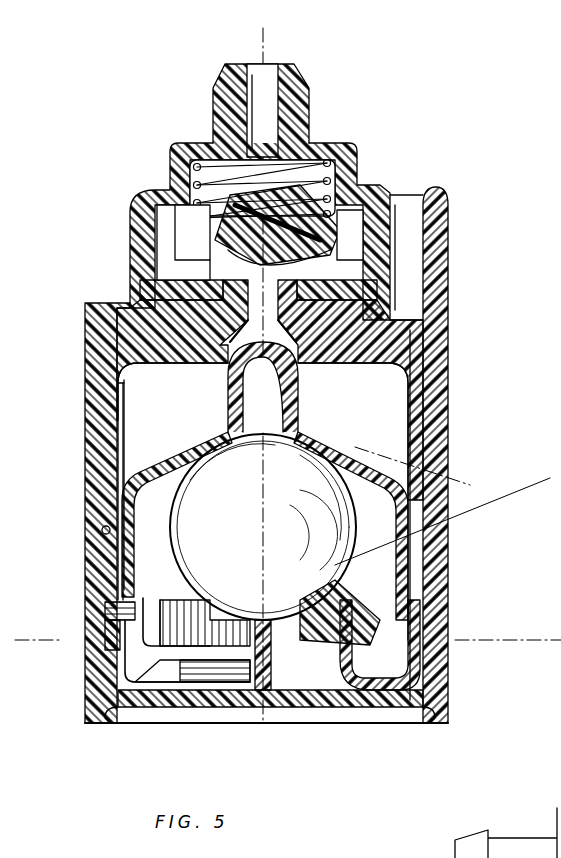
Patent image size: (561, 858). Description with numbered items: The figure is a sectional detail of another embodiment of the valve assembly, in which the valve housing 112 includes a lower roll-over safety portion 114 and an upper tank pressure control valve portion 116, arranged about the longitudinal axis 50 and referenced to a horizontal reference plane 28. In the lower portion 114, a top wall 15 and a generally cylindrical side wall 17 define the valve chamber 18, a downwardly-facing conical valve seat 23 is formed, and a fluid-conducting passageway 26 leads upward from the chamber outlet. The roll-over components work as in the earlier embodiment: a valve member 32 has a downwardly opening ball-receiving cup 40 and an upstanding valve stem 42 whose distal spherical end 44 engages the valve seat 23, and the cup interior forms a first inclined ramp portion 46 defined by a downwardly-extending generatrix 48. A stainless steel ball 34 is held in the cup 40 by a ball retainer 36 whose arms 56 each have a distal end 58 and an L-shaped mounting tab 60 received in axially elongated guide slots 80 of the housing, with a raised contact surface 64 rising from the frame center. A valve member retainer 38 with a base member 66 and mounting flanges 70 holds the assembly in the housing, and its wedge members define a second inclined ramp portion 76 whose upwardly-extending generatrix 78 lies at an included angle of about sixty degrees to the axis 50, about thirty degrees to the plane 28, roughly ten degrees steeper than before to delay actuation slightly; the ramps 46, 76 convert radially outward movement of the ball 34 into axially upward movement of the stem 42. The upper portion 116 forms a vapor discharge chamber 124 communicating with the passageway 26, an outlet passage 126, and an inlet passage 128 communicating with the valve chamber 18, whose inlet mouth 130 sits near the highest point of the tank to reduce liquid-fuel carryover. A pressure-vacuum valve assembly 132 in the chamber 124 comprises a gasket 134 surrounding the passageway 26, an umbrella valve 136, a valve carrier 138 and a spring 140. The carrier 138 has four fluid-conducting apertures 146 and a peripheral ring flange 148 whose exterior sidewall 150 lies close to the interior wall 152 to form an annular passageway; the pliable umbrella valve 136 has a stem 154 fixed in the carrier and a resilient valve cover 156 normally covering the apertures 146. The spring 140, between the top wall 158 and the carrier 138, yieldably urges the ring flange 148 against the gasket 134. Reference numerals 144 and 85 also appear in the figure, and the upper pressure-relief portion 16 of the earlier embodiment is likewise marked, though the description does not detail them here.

The longitudinal axis 50 is at (268, 34).
The outlet passage 126 is at (278, 55).
The upper tank pressure control valve portion 116 is at (357, 159).
The spring 140 is at (330, 143).
The pressure-vacuum valve assembly 132 is at (378, 184).
The lower roll-over safety portion 114 is at (440, 571).
The inlet passage 128 is at (408, 213).
The inlet mouth 130 is at (430, 239).
The vapor discharge chamber 124 is at (376, 191).
The valve housing 112 is at (74, 451).
The gasket 134 is at (140, 290).
The top wall 158 is at (318, 166).
The stem 154 is at (235, 190).
The peripheral ring flange 148 is at (345, 240).
The umbrella valve 136 is at (236, 264).
The resilient valve cover 156 is at (350, 267).
The insert 144 is at (160, 220).
The exterior sidewall 150 is at (178, 255).
The valve carrier 138 is at (175, 272).
The interior wall 152 is at (190, 205).
The fluid-conducting apertures 146 is at (210, 210).
The valve chamber 18 is at (263, 501).
The top wall 15 is at (142, 371).
The side wall 17 is at (124, 423).
The passageway 26 is at (425, 350).
The valve stem 42 is at (290, 401).
The valve seat 23 is at (290, 356).
The distal spherical end 44 is at (240, 346).
The ball-receiving cup 40 is at (162, 452).
The first inclined ramp portion 46 is at (354, 460).
The valve member 32 is at (343, 439).
The stainless steel ball 34 is at (263, 527).
The downwardly-extending generatrix 48 is at (478, 486).
The upwardly-extending generatrix 78 is at (522, 502).
The distal end 58 is at (148, 600).
The L-shaped mounting tab 60 is at (112, 605).
The guide slots 80 is at (104, 532).
The ball retainer 36 is at (119, 675).
The arms 56 is at (192, 710).
The raised contact surface 64 is at (252, 602).
The second inclined ramp portion 76 is at (340, 587).
The valve member retainer 38 is at (365, 632).
The base member 66 is at (248, 702).
The mounting flanges 70 is at (118, 717).
The horizontal reference plane 28 is at (522, 638).
The adjacent part 85 is at (512, 850).
The upper pressure-relief portion 16 is at (556, 776).